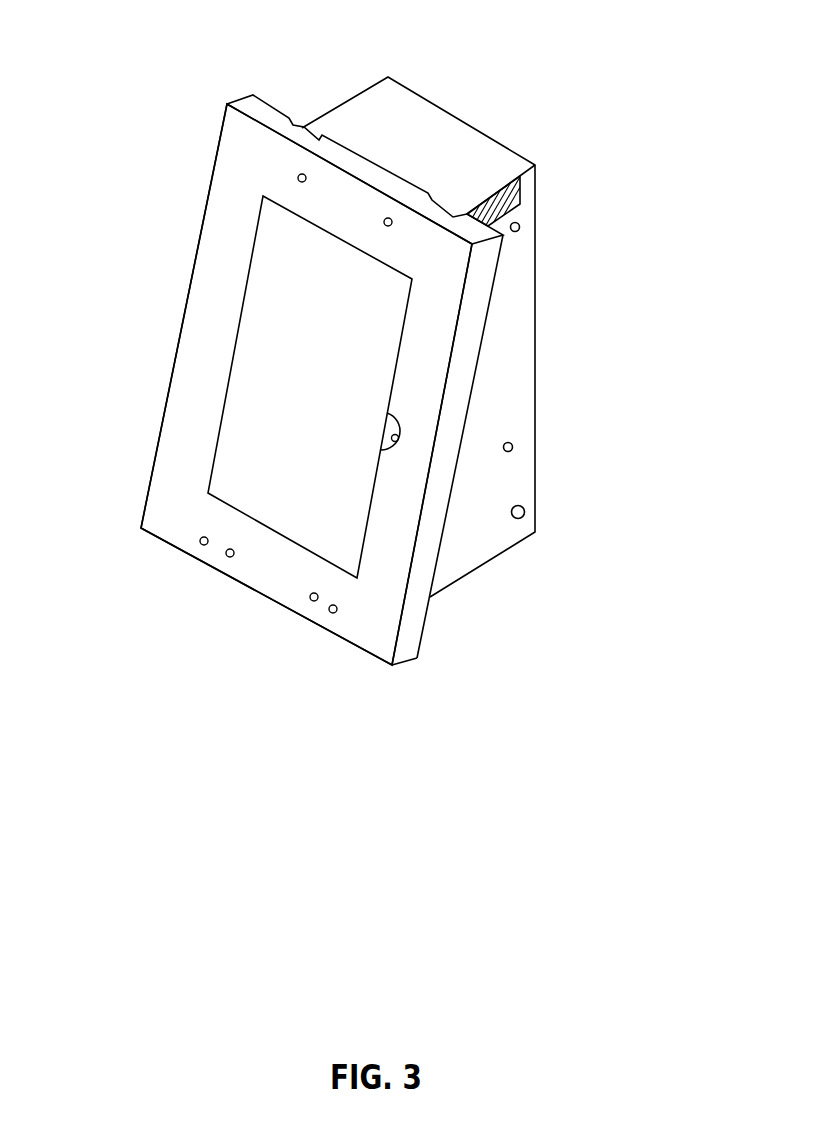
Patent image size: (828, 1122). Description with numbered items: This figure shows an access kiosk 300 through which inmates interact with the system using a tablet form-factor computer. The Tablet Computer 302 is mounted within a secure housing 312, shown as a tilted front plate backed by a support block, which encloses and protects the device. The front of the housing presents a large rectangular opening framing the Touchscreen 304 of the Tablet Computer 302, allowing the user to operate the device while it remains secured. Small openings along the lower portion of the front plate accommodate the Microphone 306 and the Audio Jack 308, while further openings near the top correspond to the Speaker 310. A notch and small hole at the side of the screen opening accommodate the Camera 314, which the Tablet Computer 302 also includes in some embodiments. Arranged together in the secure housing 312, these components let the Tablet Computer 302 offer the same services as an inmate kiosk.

The fixture assembly 300 is at (567, 37).
The Tablet Computer 302 is at (292, 418).
The Touchscreen 304 is at (332, 374).
The Microphone 306 is at (200, 540).
The Audio Jack 308 is at (311, 595).
The Speaker 310 is at (300, 175).
The secure housing 312 is at (232, 168).
The Camera 314 is at (400, 438).